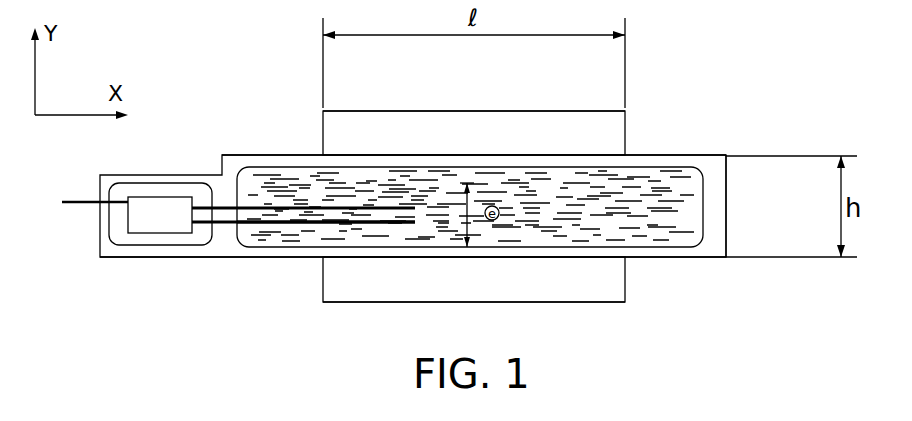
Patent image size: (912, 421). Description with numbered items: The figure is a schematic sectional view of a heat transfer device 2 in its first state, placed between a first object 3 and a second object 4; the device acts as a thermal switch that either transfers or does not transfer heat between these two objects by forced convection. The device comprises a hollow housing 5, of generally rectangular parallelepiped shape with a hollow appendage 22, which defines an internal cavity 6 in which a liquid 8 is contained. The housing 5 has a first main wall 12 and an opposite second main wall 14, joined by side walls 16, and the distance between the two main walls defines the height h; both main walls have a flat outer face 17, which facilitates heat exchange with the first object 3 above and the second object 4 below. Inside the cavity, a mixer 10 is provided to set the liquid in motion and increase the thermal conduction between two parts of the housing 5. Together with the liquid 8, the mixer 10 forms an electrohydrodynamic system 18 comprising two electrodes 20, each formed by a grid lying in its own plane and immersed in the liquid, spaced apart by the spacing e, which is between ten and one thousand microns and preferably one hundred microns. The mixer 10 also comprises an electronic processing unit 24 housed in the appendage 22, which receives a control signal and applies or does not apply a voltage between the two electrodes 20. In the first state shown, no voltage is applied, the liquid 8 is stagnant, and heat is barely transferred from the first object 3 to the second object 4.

The heat transfer device 2 is at (417, 229).
The first object 3 is at (474, 133).
The second object 4 is at (474, 279).
The hollow housing 5 is at (726, 200).
The internal cavity 6 is at (687, 188).
The liquid 8 is at (524, 205).
The mixer 10 is at (270, 233).
The first main wall 12 is at (583, 155).
The second main wall 14 is at (583, 258).
The side walls 16 is at (726, 228).
The flat outer face 17 is at (529, 111).
The electrohydrodynamic system 18 is at (304, 268).
The electrodes 20 is at (335, 222).
The appendage 22 is at (100, 252).
The electronic processing unit 24 is at (127, 215).